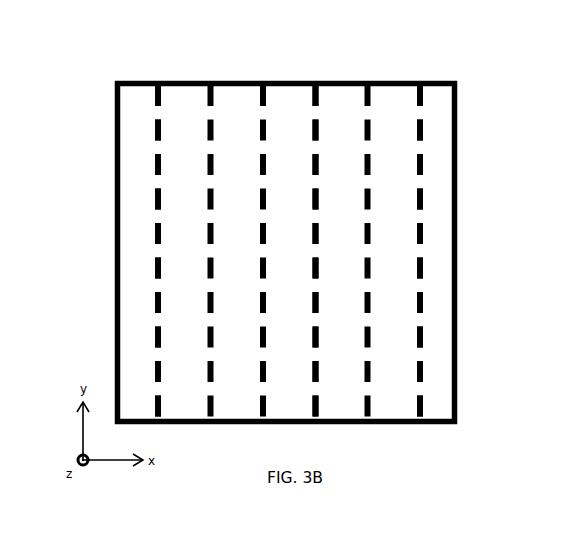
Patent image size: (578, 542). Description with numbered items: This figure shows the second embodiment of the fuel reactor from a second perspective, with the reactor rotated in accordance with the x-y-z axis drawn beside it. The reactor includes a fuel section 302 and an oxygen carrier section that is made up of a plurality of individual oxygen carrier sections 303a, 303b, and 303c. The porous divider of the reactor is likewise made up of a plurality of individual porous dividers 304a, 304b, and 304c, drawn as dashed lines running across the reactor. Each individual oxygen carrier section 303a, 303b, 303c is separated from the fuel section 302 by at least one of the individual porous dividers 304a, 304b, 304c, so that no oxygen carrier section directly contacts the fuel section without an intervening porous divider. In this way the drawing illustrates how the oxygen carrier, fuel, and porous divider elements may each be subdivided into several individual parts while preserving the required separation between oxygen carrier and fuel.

The fuel section 302 is at (433, 115).
The individual oxygen carrier section 303a is at (187, 227).
The individual oxygen carrier section 303b is at (298, 115).
The individual oxygen carrier section 303c is at (388, 157).
The individual porous divider 304a is at (155, 190).
The individual porous divider 304b is at (318, 92).
The individual porous divider 304c is at (422, 158).